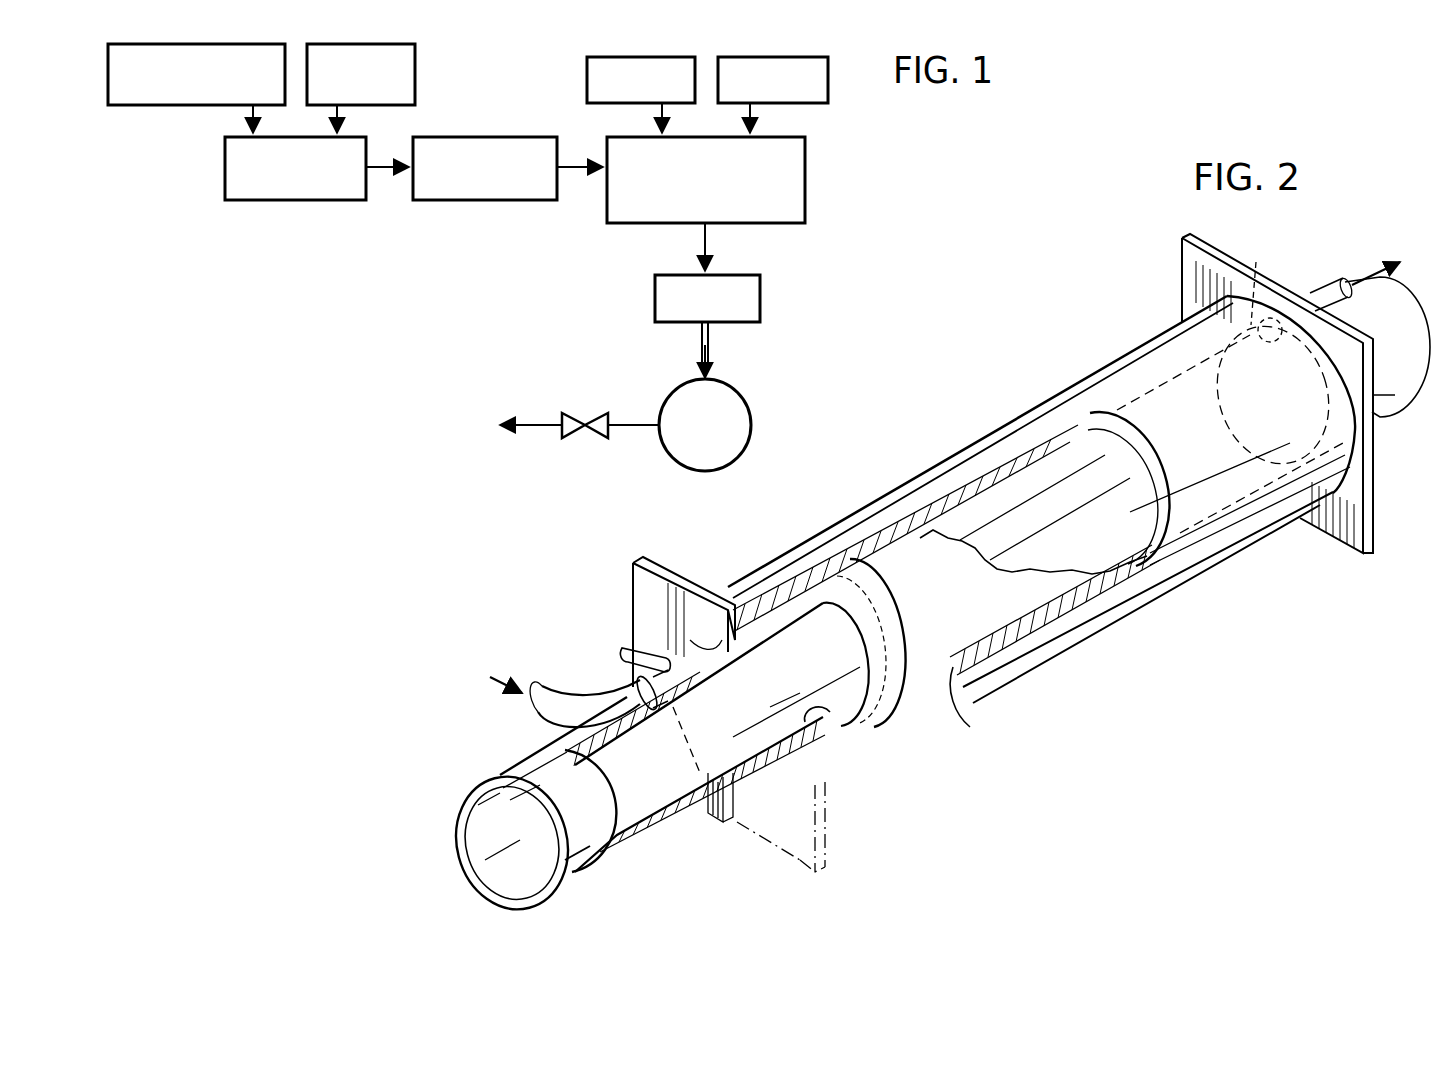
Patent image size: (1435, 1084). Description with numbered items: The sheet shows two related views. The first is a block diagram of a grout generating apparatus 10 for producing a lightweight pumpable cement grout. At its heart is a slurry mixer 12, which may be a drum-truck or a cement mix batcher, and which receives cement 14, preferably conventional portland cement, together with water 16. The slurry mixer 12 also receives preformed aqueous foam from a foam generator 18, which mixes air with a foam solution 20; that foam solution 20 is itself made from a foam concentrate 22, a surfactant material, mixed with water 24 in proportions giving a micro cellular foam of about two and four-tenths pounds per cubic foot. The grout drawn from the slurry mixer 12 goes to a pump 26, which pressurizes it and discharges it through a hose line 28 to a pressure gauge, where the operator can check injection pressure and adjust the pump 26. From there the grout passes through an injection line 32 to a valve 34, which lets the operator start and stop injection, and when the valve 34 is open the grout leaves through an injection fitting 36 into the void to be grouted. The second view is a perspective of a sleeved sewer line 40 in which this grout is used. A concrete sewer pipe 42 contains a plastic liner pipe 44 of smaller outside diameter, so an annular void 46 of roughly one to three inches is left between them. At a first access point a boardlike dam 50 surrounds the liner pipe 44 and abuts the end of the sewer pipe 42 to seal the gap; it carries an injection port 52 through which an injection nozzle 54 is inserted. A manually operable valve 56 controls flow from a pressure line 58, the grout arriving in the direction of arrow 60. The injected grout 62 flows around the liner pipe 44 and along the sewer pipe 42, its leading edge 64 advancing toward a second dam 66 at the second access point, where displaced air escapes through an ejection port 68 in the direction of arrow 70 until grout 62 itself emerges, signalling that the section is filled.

In FIG. 1, the grout generating apparatus 10 is at (379, 268).
In FIG. 1, the slurry mixer 12 is at (805, 180).
In FIG. 1, the cement 14 is at (828, 88).
In FIG. 1, the water 16 is at (587, 83).
In FIG. 1, the foam generator 18 is at (458, 200).
In FIG. 1, the foam solution 20 is at (277, 200).
In FIG. 1, the foam concentrate 22 is at (168, 105).
In FIG. 1, the water 24 is at (415, 73).
In FIG. 1, the pump 26 is at (762, 300).
In FIG. 1, the hose line 28 is at (710, 333).
In FIG. 1, the injection line 32 is at (643, 425).
In FIG. 1, the valve 34 is at (590, 413).
In FIG. 1, the injection fitting 36 is at (533, 425).
In FIG. 2, the sewer line 40 is at (1156, 666).
In FIG. 2, the sewer pipe 42 is at (1073, 390).
In FIG. 2, the liner pipe 44 is at (592, 866).
In FIG. 2, the annular void 46 is at (1120, 515).
In FIG. 2, the dam 50 is at (640, 598).
In FIG. 2, the injection port 52 is at (708, 635).
In FIG. 2, the injection nozzle 54 is at (650, 650).
In FIG. 2, the valve 56 is at (655, 675).
In FIG. 2, the pressure line 58 is at (540, 715).
In FIG. 2, the arrow 60 is at (490, 677).
In FIG. 2, the grout 62 is at (957, 610).
In FIG. 2, the leading edge 64 is at (1005, 555).
In FIG. 2, the second dam 66 is at (1357, 518).
In FIG. 2, the ejection port 68 is at (1315, 292).
In FIG. 2, the arrow 70 is at (1375, 272).